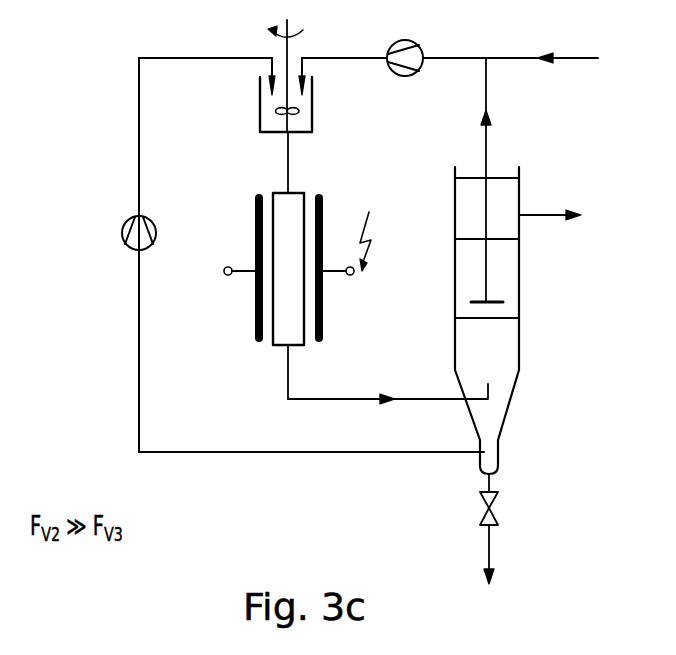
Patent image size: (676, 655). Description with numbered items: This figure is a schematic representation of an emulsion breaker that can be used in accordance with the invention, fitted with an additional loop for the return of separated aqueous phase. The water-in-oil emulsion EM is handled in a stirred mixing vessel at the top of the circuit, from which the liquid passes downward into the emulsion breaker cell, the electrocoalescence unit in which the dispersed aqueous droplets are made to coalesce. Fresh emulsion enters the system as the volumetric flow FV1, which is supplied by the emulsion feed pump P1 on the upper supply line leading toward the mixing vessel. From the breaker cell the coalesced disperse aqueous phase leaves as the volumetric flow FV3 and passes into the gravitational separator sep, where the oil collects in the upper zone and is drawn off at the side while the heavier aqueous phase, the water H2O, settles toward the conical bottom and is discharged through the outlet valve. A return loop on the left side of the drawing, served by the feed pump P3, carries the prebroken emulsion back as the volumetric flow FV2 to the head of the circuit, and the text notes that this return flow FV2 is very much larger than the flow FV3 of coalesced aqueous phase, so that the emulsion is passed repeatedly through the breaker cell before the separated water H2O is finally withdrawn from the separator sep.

The water H2O is at (368, 236).
The emulsion (w/o) EM is at (305, 76).
The emulsion feed pump P1 is at (419, 50).
The feed pump for coalesced organic phase P3 is at (151, 228).
The electrolysis / separation cell is at (297, 265).
The volumetric flow, fresh emulsion FV1 is at (502, 180).
The volumetric flow, prebroken emulsion FV2 is at (311, 470).
The volumetric flow, coalesced disperse (aqueous) phase FV3 is at (388, 382).
The settling separator sep is at (505, 376).